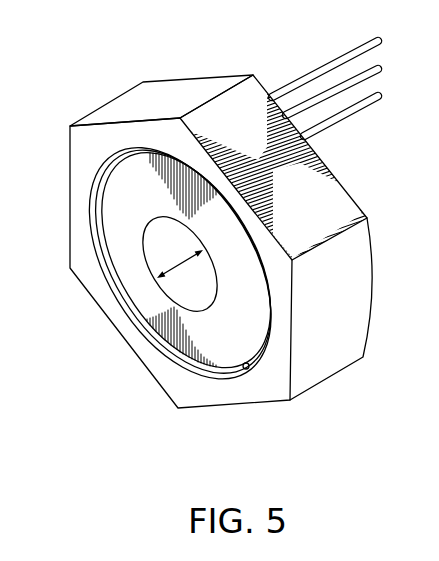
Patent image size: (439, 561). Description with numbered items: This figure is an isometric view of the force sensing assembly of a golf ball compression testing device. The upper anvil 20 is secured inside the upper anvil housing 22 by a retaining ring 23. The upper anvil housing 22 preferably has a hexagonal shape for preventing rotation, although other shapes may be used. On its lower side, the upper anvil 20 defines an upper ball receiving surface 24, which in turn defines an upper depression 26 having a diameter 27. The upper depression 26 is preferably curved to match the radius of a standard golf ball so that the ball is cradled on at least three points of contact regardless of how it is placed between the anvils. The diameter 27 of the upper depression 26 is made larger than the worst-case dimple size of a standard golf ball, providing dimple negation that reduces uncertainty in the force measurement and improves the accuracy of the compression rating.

The upper anvil 20 is at (97, 192).
The upper anvil housing 22 is at (125, 93).
The retaining ring 23 is at (240, 373).
The upper ball receiving surface 24 is at (112, 248).
The upper depression 26 is at (153, 257).
The diameter 27 is at (167, 295).